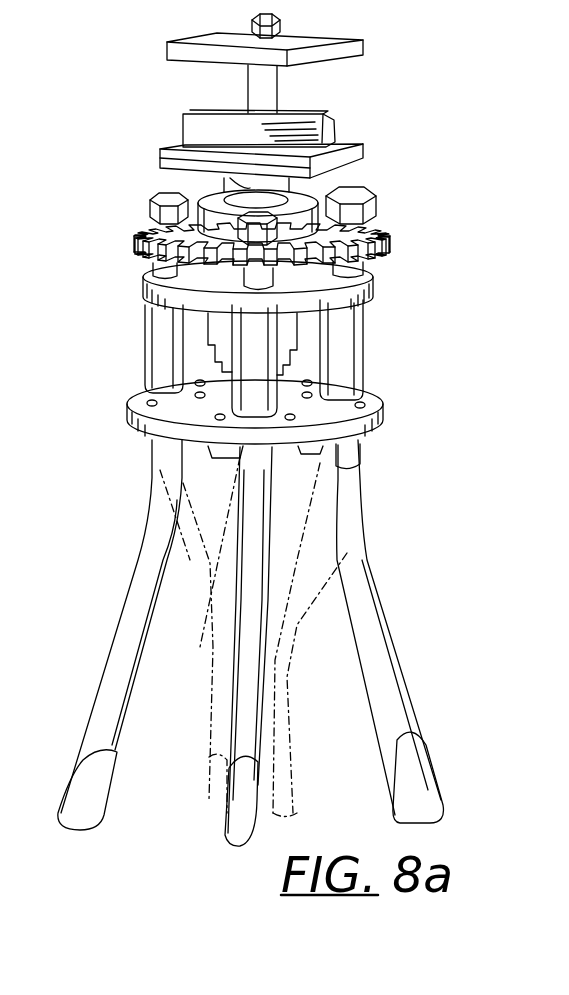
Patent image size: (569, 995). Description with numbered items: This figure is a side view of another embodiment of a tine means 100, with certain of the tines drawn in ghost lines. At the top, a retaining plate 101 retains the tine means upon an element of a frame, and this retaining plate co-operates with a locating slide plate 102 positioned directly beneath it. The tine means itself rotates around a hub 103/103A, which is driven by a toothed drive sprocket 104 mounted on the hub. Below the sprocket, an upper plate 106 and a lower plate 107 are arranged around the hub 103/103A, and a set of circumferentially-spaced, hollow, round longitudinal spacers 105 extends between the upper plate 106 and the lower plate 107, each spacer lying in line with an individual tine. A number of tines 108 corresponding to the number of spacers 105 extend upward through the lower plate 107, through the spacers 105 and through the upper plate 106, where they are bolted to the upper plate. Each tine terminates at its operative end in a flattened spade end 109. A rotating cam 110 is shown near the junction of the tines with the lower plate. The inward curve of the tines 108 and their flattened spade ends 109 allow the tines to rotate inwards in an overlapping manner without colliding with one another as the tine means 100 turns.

The tine means 100 is at (386, 327).
The retaining plate 101 is at (217, 33).
The locating slide plate 102 is at (202, 128).
The hub 103 is at (165, 158).
The hub 103A is at (221, 331).
The drive sprocket 104 is at (380, 233).
The spacers 105 is at (348, 356).
The upper plate 106 is at (378, 277).
The lower plate 107 is at (372, 428).
The tines 108 is at (263, 563).
The spade end 109 is at (425, 768).
The rotating cam 110 is at (342, 470).